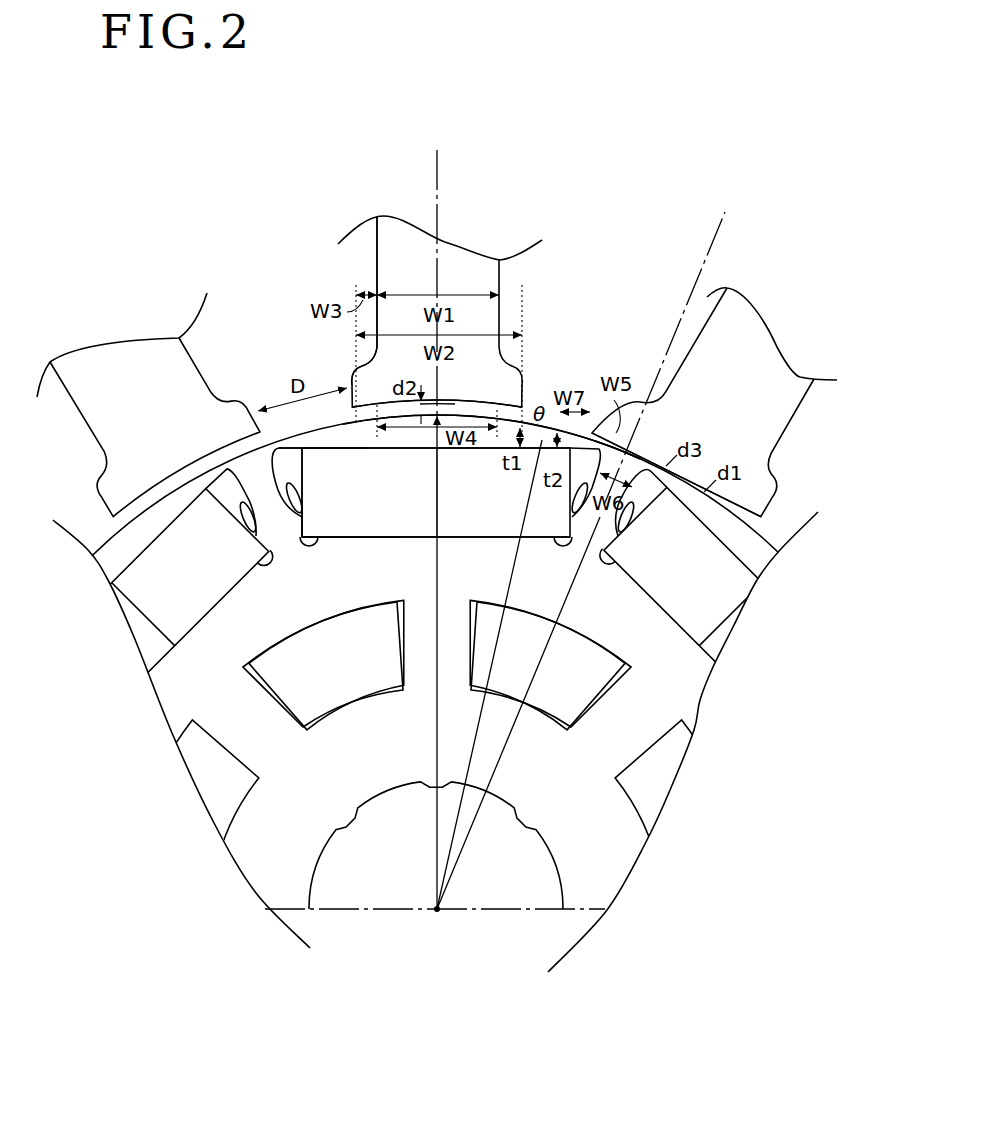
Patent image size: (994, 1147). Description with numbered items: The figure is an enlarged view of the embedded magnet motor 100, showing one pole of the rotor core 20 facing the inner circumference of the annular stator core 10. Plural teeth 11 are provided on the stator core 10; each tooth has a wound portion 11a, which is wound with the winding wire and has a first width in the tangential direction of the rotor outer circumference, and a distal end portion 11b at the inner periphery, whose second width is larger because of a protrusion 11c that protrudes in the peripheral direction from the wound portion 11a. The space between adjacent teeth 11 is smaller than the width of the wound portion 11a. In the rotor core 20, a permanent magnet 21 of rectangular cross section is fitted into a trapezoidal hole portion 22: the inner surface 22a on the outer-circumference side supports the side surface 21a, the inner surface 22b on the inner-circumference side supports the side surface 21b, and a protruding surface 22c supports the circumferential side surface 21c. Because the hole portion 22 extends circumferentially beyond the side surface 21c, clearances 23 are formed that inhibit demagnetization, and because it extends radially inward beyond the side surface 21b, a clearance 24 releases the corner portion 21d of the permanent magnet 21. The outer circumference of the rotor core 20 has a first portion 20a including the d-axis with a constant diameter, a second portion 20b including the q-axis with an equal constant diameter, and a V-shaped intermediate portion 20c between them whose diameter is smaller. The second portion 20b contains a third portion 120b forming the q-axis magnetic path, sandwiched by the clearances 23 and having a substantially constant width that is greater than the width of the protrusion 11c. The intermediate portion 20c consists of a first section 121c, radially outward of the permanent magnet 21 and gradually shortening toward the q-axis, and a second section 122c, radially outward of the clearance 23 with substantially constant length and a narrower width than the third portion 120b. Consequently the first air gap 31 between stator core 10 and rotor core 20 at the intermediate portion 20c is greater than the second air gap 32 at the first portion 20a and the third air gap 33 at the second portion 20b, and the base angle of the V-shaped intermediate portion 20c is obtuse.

The embedded magnet motor 100 is at (222, 213).
The stator core 10 is at (135, 318).
The teeth 11 is at (375, 262).
The wound portion 11a is at (393, 277).
The distal end portion 11b is at (380, 411).
The protrusion 11c is at (360, 370).
The rotor core 20 is at (179, 680).
The first portion 20a is at (487, 432).
The second portion 20b is at (563, 438).
The third portion 120b is at (586, 452).
The intermediate portion 20c is at (596, 302).
The first section 121c is at (528, 412).
The second section 122c is at (588, 430).
The permanent magnet 21 is at (419, 523).
The side surface 21a is at (421, 449).
The side surface 21b is at (462, 537).
The side surface 21c is at (306, 541).
The corner portion 21d is at (312, 545).
The hole portion 22 is at (358, 528).
The inner surface 22a is at (360, 452).
The inner surface 22b is at (380, 530).
The protruding surface 22c is at (345, 532).
The clearance 23 is at (282, 470).
The clearance 24 is at (556, 538).
The first air gap 31 is at (707, 490).
The second air gap 32 is at (447, 400).
The third air gap 33 is at (648, 448).